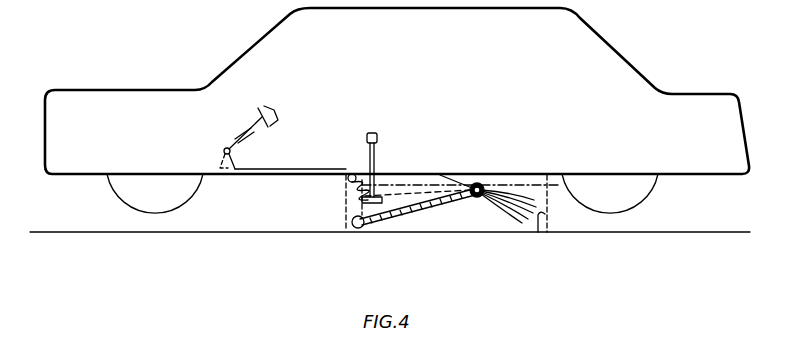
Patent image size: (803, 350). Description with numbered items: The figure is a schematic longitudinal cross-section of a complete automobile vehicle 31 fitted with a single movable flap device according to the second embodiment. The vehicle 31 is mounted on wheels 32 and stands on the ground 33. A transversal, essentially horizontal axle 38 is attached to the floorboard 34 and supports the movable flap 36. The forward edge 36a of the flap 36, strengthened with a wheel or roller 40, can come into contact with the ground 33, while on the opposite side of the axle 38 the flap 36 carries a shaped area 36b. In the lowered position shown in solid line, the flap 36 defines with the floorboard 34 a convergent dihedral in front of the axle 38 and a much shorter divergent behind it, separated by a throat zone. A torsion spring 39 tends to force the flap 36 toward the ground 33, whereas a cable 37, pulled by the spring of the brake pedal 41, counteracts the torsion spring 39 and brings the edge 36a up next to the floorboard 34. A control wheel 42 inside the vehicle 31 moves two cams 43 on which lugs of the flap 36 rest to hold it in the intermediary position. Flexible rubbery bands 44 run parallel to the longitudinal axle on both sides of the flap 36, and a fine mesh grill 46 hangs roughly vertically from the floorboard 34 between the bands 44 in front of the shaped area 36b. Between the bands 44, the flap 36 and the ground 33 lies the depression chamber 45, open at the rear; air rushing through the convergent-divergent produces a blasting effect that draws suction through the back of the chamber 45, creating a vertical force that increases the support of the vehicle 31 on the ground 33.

The automobile vehicle 31 is at (133, 100).
The wheels 32 is at (135, 218).
The ground 33 is at (233, 232).
The floorboard 34 is at (578, 175).
The movable flap 36 is at (440, 209).
The forward edge 36a is at (370, 228).
The shaped area 36b is at (523, 175).
The cable 37 is at (343, 193).
The transversal axle 38 is at (490, 176).
The torsion spring 39 is at (474, 176).
The roller 40 is at (357, 229).
The brake pedal 41 is at (254, 118).
The driving wheel 42 is at (378, 146).
The cams 43 is at (393, 197).
The flexible bands 44 is at (552, 213).
The depression chamber 45 is at (497, 210).
The fine mesh grill 46 is at (538, 232).